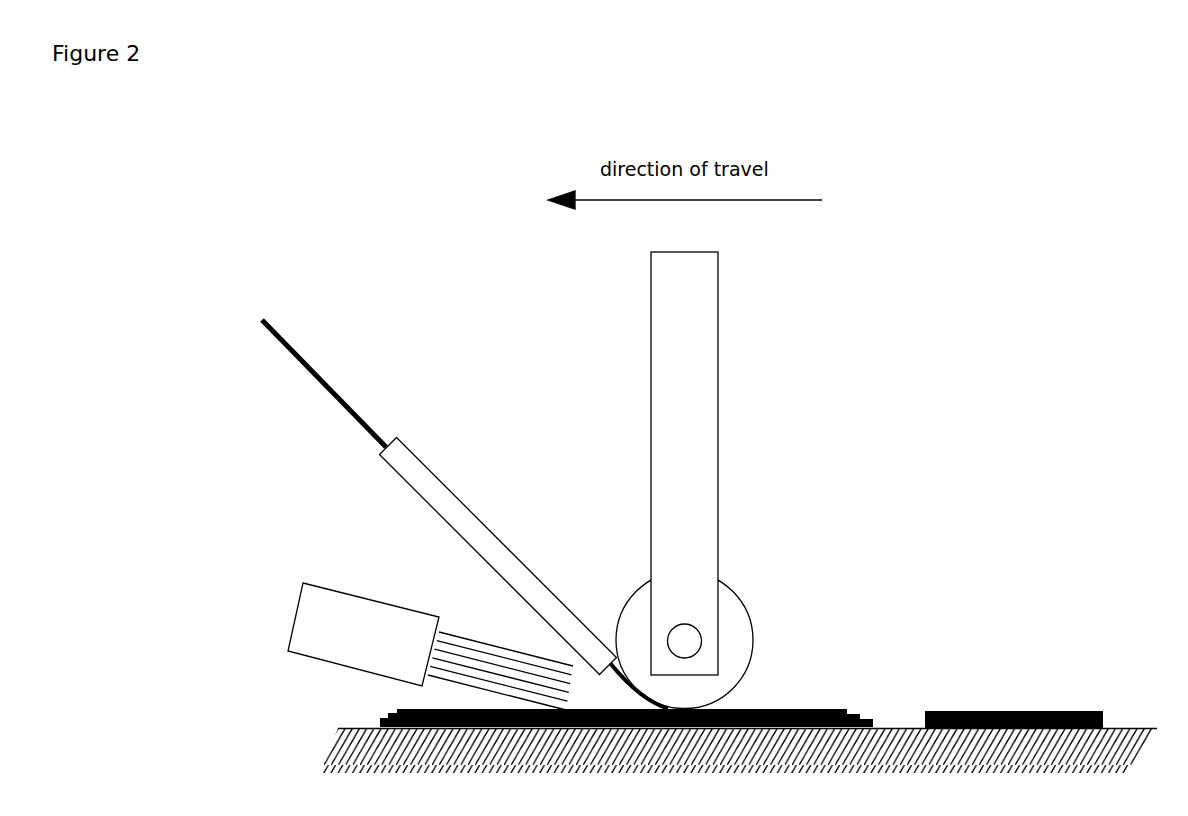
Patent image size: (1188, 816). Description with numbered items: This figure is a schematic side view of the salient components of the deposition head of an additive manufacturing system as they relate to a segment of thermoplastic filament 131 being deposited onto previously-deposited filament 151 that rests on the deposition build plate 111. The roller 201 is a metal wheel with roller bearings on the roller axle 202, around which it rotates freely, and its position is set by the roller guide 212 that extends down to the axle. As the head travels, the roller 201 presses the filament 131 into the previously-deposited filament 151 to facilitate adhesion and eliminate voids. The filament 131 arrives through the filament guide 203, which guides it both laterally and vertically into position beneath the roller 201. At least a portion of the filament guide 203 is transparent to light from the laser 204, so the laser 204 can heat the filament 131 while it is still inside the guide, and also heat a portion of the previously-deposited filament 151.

The deposition build plate 111 is at (701, 729).
The previously-deposited filament 151 is at (741, 699).
The roller 201 is at (744, 640).
The roller axle 202 is at (772, 568).
The roller guide 212 is at (629, 463).
The thermoplastic filament 131 is at (465, 514).
The filament guide 203 is at (498, 556).
The laser 204 is at (376, 646).